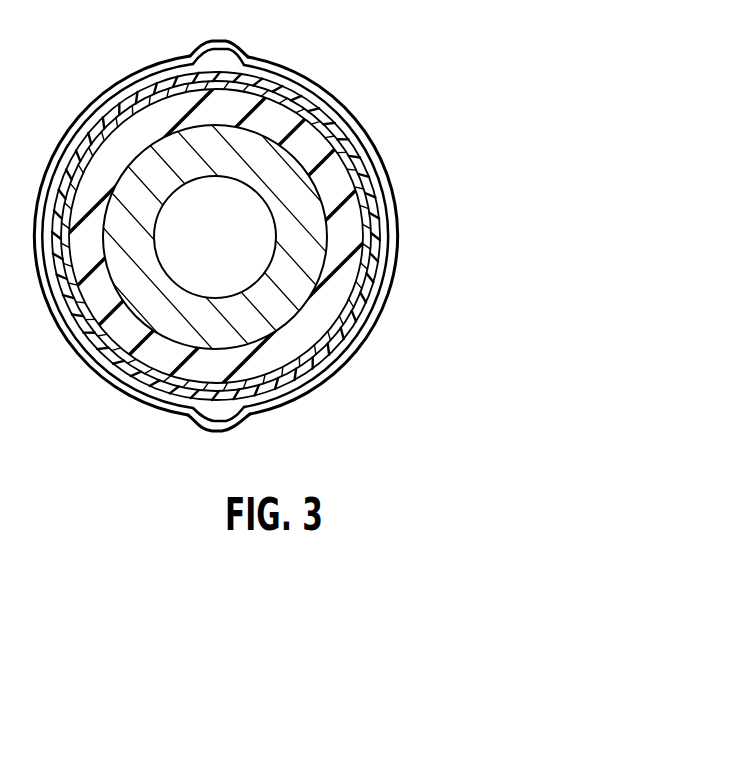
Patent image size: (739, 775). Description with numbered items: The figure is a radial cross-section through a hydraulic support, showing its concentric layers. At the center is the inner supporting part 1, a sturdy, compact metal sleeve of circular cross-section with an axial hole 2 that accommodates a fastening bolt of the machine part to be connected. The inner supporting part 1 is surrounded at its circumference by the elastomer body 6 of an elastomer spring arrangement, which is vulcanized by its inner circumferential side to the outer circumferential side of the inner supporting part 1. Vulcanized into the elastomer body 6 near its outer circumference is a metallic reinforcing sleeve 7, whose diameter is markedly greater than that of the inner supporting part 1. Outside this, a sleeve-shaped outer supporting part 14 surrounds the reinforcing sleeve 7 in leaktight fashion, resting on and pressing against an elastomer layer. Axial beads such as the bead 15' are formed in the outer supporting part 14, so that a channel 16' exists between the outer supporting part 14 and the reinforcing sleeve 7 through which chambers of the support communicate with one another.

The inner supporting part 1 is at (183, 152).
The axial hole 2 is at (176, 262).
The elastomer body 6 is at (308, 145).
The reinforcing sleeve 7 is at (357, 181).
The outer supporting part 14 is at (367, 320).
The axial bead 15' is at (242, 35).
The channel 16' is at (180, 34).